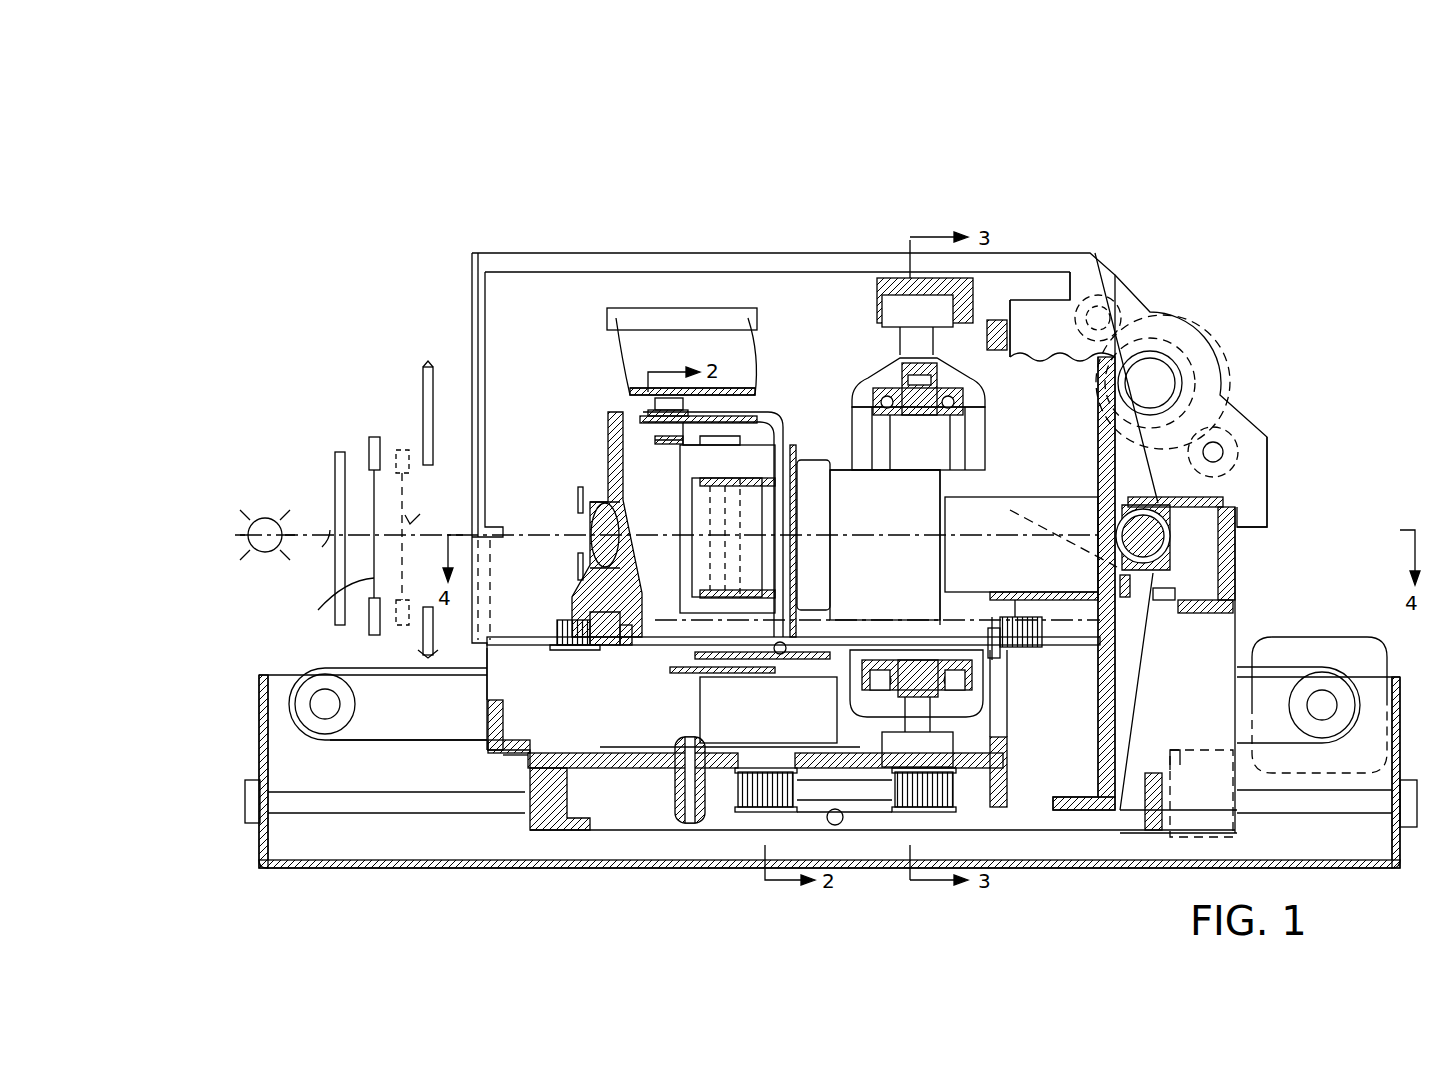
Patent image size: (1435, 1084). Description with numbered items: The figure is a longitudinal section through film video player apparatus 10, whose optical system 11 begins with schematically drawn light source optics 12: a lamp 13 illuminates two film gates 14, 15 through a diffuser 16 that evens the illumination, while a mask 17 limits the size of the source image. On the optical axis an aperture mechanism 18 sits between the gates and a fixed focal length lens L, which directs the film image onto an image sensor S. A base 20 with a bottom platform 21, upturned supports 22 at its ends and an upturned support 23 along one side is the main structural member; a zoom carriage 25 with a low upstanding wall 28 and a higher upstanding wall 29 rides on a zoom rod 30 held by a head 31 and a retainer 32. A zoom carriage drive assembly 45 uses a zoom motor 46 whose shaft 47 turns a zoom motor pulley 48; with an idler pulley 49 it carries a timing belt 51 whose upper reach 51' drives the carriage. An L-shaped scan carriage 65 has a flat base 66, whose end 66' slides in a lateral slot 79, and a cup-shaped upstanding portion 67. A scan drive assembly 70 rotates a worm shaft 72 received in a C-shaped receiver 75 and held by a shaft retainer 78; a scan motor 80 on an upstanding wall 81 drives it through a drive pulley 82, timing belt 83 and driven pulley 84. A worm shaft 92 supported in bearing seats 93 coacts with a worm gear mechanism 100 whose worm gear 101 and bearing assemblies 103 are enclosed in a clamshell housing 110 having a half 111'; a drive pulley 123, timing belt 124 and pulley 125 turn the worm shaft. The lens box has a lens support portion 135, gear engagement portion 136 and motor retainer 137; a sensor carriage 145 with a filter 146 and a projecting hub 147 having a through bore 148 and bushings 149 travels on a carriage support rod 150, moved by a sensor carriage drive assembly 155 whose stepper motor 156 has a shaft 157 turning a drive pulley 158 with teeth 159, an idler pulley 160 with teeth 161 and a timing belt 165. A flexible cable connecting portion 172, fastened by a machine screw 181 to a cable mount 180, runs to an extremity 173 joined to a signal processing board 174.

The film video player apparatus 10 is at (622, 242).
The optical system 11 is at (298, 580).
The light source optics 12 is at (270, 454).
The lamp 13 is at (265, 518).
The film gate 14 is at (400, 450).
The film gate 15 is at (369, 440).
The diffuser 16 is at (335, 468).
The mask 17 is at (420, 378).
The aperture mechanism 18 is at (576, 495).
The base 20 is at (395, 868).
The bottom platform 21 is at (670, 832).
The upturned supports 22 is at (263, 860).
The upturned support 23 is at (440, 848).
The zoom carriage 25 is at (1121, 830).
The upstanding wall 28 is at (530, 812).
The upstanding wall 29 is at (1270, 572).
The zoom rod 30 is at (1332, 812).
The head 31 is at (1405, 830).
The retainer 32 is at (268, 838).
The zoom carriage drive assembly 45 is at (1345, 637).
The zoom motor 46 is at (1298, 650).
The shaft 47 is at (1330, 695).
The zoom motor pulley 48 is at (1338, 715).
The idler pulley 49 is at (315, 728).
The timing belt 51 is at (1298, 717).
The upper reach 51' is at (374, 689).
The scan carriage 65 is at (1040, 300).
The flat base 66 is at (765, 798).
The end 66' is at (473, 757).
The upstanding portion 67 is at (902, 268).
The scan drive assembly 70 is at (1232, 376).
The worm shaft 72 is at (1185, 540).
The C-shaped receiver 75 is at (1232, 510).
The shaft retainer 78 is at (1220, 597).
The lateral slot 79 is at (520, 748).
The scan motor 80 is at (1210, 356).
The upstanding wall 81 is at (1268, 440).
The drive pulley 82 is at (1232, 415).
The timing belt 83 is at (1226, 452).
The driven pulley 84 is at (1250, 530).
The worm shaft 92 is at (905, 335).
The bearing seats 93 is at (895, 282).
The worm gear mechanism 100 is at (968, 378).
The worm gear 101 is at (918, 660).
The bearing assembly 103 is at (890, 680).
The clamshell housing 110 is at (958, 358).
The cup-shaped half 111' is at (1054, 282).
The drive pulley 123 is at (760, 812).
The timing belt 124 is at (865, 802).
The pulley 125 is at (930, 812).
The lens support portion 135 is at (605, 650).
The gear engagement portion 136 is at (988, 645).
The motor retainer 137 is at (1118, 598).
The sensor carriage 145 is at (815, 508).
The filter 146 is at (725, 505).
The projecting hub 147 is at (700, 673).
The through bore 148 is at (785, 668).
The bushings 149 is at (745, 660).
The carriage support rod 150 is at (652, 650).
The sensor carriage drive assembly 155 is at (1043, 636).
The sensor carriage stepper motor 156 is at (1012, 508).
The shaft 157 is at (1020, 597).
The drive pulley 158 is at (1040, 620).
The teeth 159 is at (1012, 642).
The idler pulley 160 is at (555, 650).
The teeth 161 is at (572, 650).
The timing belt 165 is at (558, 630).
The connecting portion 172 is at (606, 428).
The extremity 173 is at (678, 338).
The signal processing board 174 is at (540, 301).
The cable mount 180 is at (760, 412).
The machine screw 181 is at (640, 405).
The lens L is at (592, 530).
The image sensor S is at (815, 553).